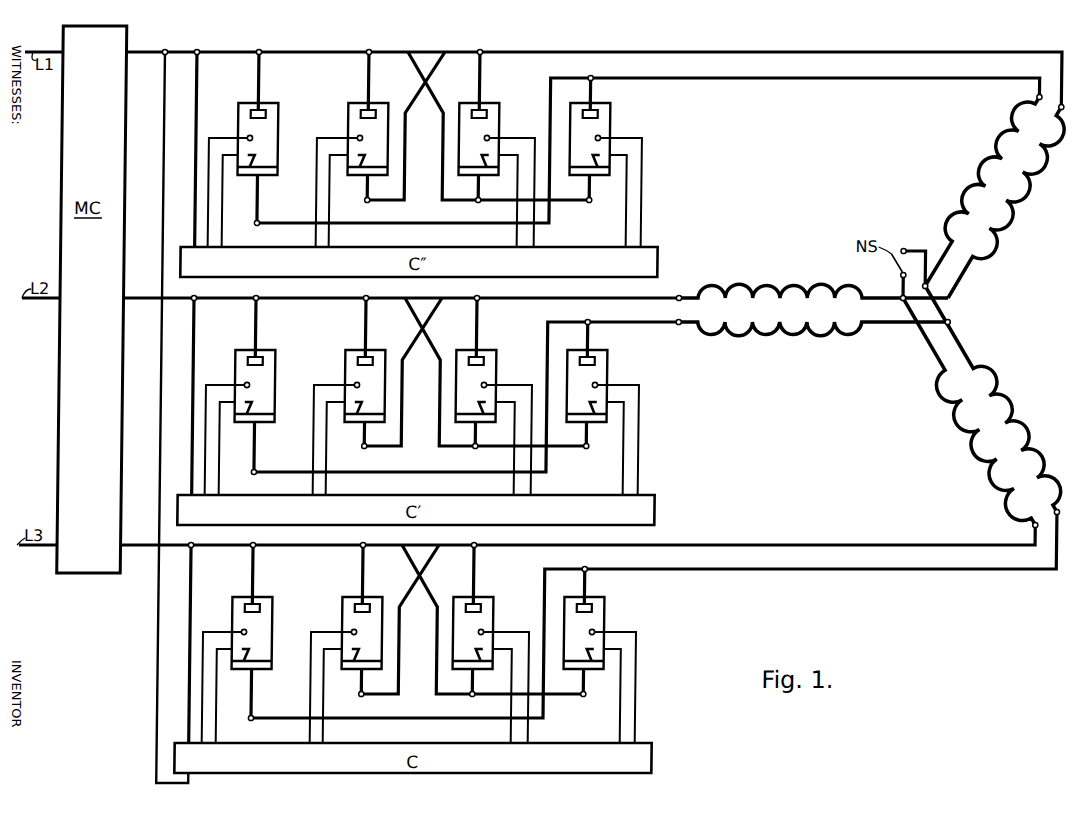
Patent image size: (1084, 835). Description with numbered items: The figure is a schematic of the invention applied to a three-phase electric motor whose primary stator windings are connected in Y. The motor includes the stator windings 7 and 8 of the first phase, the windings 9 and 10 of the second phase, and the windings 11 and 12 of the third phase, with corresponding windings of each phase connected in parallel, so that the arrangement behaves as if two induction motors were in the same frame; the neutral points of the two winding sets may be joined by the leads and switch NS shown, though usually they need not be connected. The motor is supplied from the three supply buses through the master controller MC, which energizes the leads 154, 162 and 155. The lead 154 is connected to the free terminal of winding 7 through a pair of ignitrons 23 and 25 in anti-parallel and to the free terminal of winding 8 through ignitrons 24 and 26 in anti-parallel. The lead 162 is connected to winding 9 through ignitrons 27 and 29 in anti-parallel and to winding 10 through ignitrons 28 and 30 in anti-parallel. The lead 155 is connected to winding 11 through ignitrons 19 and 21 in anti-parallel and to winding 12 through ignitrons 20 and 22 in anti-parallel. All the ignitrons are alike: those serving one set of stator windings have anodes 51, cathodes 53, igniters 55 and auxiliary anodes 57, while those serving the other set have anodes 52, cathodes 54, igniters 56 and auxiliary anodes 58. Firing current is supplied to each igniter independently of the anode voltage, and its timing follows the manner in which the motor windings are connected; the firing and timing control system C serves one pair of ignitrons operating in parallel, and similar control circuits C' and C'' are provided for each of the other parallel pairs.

The stator winding 7 is at (1012, 218).
The stator winding 8 is at (986, 160).
The stator winding 9 is at (771, 287).
The stator winding 10 is at (789, 335).
The stator winding 11 is at (969, 436).
The stator winding 12 is at (1030, 436).
The ignitron 19 is at (349, 597).
The ignitron 20 is at (240, 597).
The ignitron 21 is at (497, 598).
The ignitron 22 is at (607, 598).
The ignitron 23 is at (376, 105).
The ignitron 24 is at (277, 105).
The ignitron 25 is at (498, 105).
The ignitron 26 is at (609, 105).
The ignitron 27 is at (376, 355).
The ignitron 28 is at (277, 355).
The ignitron 29 is at (498, 355).
The ignitron 30 is at (609, 355).
The anode 51 is at (359, 110).
The anode 52 is at (248, 110).
The cathode 53 is at (371, 175).
The cathode 54 is at (276, 170).
The igniter 55 is at (362, 160).
The igniter 56 is at (252, 160).
The auxiliary anode 57 is at (356, 136).
The auxiliary anode 58 is at (246, 136).
The lead 154 is at (149, 54).
The lead 155 is at (140, 537).
The lead 162 is at (156, 298).